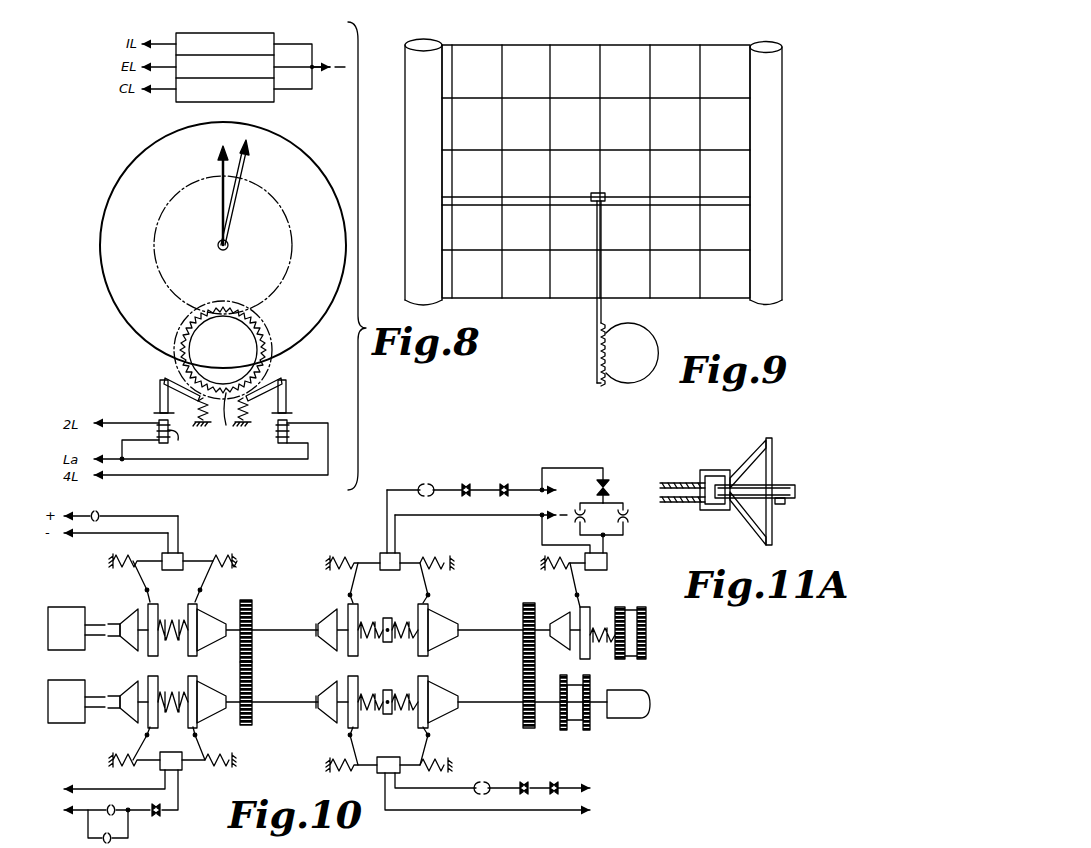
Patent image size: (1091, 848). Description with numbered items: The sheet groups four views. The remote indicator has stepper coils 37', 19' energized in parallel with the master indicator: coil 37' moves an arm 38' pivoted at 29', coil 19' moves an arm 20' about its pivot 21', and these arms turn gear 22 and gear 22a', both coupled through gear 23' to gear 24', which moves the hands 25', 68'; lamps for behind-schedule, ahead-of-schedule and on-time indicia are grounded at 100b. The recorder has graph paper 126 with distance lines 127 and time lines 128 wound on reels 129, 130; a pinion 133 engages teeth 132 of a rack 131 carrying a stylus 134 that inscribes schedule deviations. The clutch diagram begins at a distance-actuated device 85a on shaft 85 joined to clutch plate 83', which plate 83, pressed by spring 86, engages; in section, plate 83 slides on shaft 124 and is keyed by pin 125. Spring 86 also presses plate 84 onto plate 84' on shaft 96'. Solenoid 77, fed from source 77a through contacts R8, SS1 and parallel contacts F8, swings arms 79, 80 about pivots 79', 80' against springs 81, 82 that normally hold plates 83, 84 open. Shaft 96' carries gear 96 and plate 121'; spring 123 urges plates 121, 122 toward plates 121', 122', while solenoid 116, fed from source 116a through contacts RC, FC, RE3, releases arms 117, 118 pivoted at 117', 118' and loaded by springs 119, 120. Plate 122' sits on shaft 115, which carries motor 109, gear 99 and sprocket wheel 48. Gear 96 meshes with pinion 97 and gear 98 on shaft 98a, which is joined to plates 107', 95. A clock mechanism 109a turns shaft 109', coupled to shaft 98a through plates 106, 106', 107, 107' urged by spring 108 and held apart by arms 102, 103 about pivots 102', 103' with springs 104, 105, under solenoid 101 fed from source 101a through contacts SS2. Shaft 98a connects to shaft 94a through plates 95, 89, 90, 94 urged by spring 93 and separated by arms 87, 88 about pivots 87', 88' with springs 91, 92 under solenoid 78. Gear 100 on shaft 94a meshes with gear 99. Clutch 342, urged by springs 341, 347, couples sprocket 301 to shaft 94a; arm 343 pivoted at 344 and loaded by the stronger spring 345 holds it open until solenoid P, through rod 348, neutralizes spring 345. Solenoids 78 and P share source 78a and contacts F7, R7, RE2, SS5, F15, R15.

In FIG. 8, the ground 100b is at (327, 63).
In FIG. 8, the gear 24' is at (223, 245).
In FIG. 8, the hand 68' is at (195, 195).
In FIG. 8, the hand 25' is at (247, 192).
In FIG. 8, the gear 23' is at (236, 350).
In FIG. 8, the gear 22a' is at (147, 380).
In FIG. 8, the arm 38' is at (140, 396).
In FIG. 8, the arm 20' is at (281, 395).
In FIG. 8, the pivot point 29' is at (192, 412).
In FIG. 8, the spring 21' is at (253, 412).
In FIG. 8, the pawl 22 is at (221, 417).
In FIG. 8, the stepper coil 37' is at (176, 436).
In FIG. 8, the stepper coil 19' is at (269, 437).
In FIG. 9, the reel 129 is at (436, 42).
In FIG. 9, the reel 130 is at (770, 42).
In FIG. 9, the graph paper 126 is at (596, 172).
In FIG. 9, the time lines 128 is at (563, 98).
In FIG. 9, the distance lines 127 is at (695, 268).
In FIG. 9, the pen or pencil 134 is at (602, 192).
In FIG. 9, the rack 131 is at (596, 333).
In FIG. 9, the pinion 133 is at (640, 324).
In FIG. 9, the teeth 132 is at (606, 380).
In FIG. 11A, the shaft 85 is at (684, 482).
In FIG. 10, the shaft 85 is at (112, 708).
In FIG. 11A, the shaft 124 is at (735, 518).
In FIG. 11A, the coupling or clutch 83' is at (737, 490).
In FIG. 10, the coupling or clutch 83' is at (123, 697).
In FIG. 11A, the clutch plate 83 is at (785, 491).
In FIG. 10, the clutch plate 83 is at (156, 694).
In FIG. 11A, the pin 125 is at (778, 482).
In FIG. 11A, the spring 86 is at (785, 504).
In FIG. 10, the spring 86 is at (172, 714).
In FIG. 10, the contacts SS2 is at (121, 507).
In FIG. 10, the source 101a is at (52, 530).
In FIG. 10, the solenoid 101 is at (183, 558).
In FIG. 10, the spring 104 is at (115, 555).
In FIG. 10, the spring 105 is at (228, 552).
In FIG. 10, the arm 102 is at (119, 581).
In FIG. 10, the pivot point 102' is at (120, 600).
In FIG. 10, the arm 103 is at (219, 581).
In FIG. 10, the pivot point 103' is at (225, 598).
In FIG. 10, the clock mechanism 109a is at (66, 650).
In FIG. 10, the shaft 109' is at (83, 612).
In FIG. 10, the clutch plate 106' is at (115, 633).
In FIG. 10, the clutch plate 106 is at (132, 638).
In FIG. 10, the spring 108 is at (170, 624).
In FIG. 10, the clutch plate 107 is at (213, 630).
In FIG. 10, the clutch plate 107' is at (206, 618).
In FIG. 10, the gear 98 is at (252, 606).
In FIG. 10, the pinion 97 is at (252, 650).
In FIG. 10, the gear wheel 96 is at (265, 689).
In FIG. 10, the shaft 96' is at (285, 675).
In FIG. 10, the distance-actuated device 85a is at (66, 722).
In FIG. 10, the clutch plate 84 is at (202, 694).
In FIG. 10, the clutch plate 84' is at (218, 698).
In FIG. 10, the arm 79 is at (115, 743).
In FIG. 10, the pivot point 79' is at (131, 731).
In FIG. 10, the arm 80 is at (212, 743).
In FIG. 10, the pivot point 80' is at (217, 732).
In FIG. 10, the spring 81 is at (124, 764).
In FIG. 10, the solenoid 77 is at (180, 770).
In FIG. 10, the spring 82 is at (220, 772).
In FIG. 10, the source 77a is at (40, 810).
In FIG. 10, the contacts R8 is at (106, 801).
In FIG. 10, the contacts F8 is at (106, 830).
In FIG. 10, the contacts SS1 is at (154, 818).
In FIG. 10, the contacts F7 is at (424, 482).
In FIG. 10, the contacts R7 is at (480, 482).
In FIG. 10, the contacts RE2 is at (518, 482).
In FIG. 10, the source 78a is at (548, 503).
In FIG. 10, the contacts SS5 is at (591, 485).
In FIG. 10, the contacts R15 is at (595, 528).
In FIG. 10, the contacts F15 is at (629, 519).
In FIG. 10, the rod 348 is at (548, 548).
In FIG. 10, the spring 345 is at (548, 560).
In FIG. 10, the solenoid P is at (607, 563).
In FIG. 10, the lever arm 343 is at (572, 580).
In FIG. 10, the pivot 344 is at (579, 595).
In FIG. 10, the spring 92 is at (342, 560).
In FIG. 10, the solenoid 78 is at (392, 570).
In FIG. 10, the spring 91 is at (440, 556).
In FIG. 10, the arm 88 is at (362, 609).
In FIG. 10, the pivot point 88' is at (337, 593).
In FIG. 10, the arm 87 is at (433, 609).
In FIG. 10, the pivot point 87' is at (443, 598).
In FIG. 10, the clutch plate 95 is at (326, 618).
In FIG. 10, the shaft 98a is at (300, 636).
In FIG. 10, the clutch plate 89 is at (365, 624).
In FIG. 10, the spring 93 is at (390, 642).
In FIG. 10, the clutch plate 90 is at (405, 624).
In FIG. 10, the clutch plate 94 is at (450, 618).
In FIG. 10, the shaft 94a is at (495, 630).
In FIG. 10, the clutch plate 121' is at (320, 702).
In FIG. 10, the clutch plate 121 is at (369, 698).
In FIG. 10, the spring 123 is at (392, 714).
In FIG. 10, the clutch plate 122 is at (413, 698).
In FIG. 10, the clutch plate 122' is at (454, 697).
In FIG. 10, the gear wheel 99 is at (523, 700).
In FIG. 10, the gear 100 is at (523, 633).
In FIG. 10, the arm 117 is at (368, 746).
In FIG. 10, the pivot point 117' is at (334, 738).
In FIG. 10, the arm 118 is at (413, 746).
In FIG. 10, the pivot point 118' is at (443, 738).
In FIG. 10, the spring 119 is at (349, 770).
In FIG. 10, the solenoid 116 is at (396, 773).
In FIG. 10, the spring 120 is at (440, 756).
In FIG. 10, the source 116a is at (610, 800).
In FIG. 10, the contacts RC is at (484, 780).
In FIG. 10, the contacts FC is at (524, 780).
In FIG. 10, the contacts RE3 is at (559, 780).
In FIG. 10, the clutch 342 is at (572, 652).
In FIG. 10, the spring 347 is at (606, 644).
In FIG. 10, the spring 341 is at (626, 633).
In FIG. 10, the sprocket wheel 301 is at (646, 622).
In FIG. 10, the sprocket wheel 48 is at (574, 730).
In FIG. 10, the motor 109 is at (643, 698).
In FIG. 10, the shaft 115 is at (600, 714).